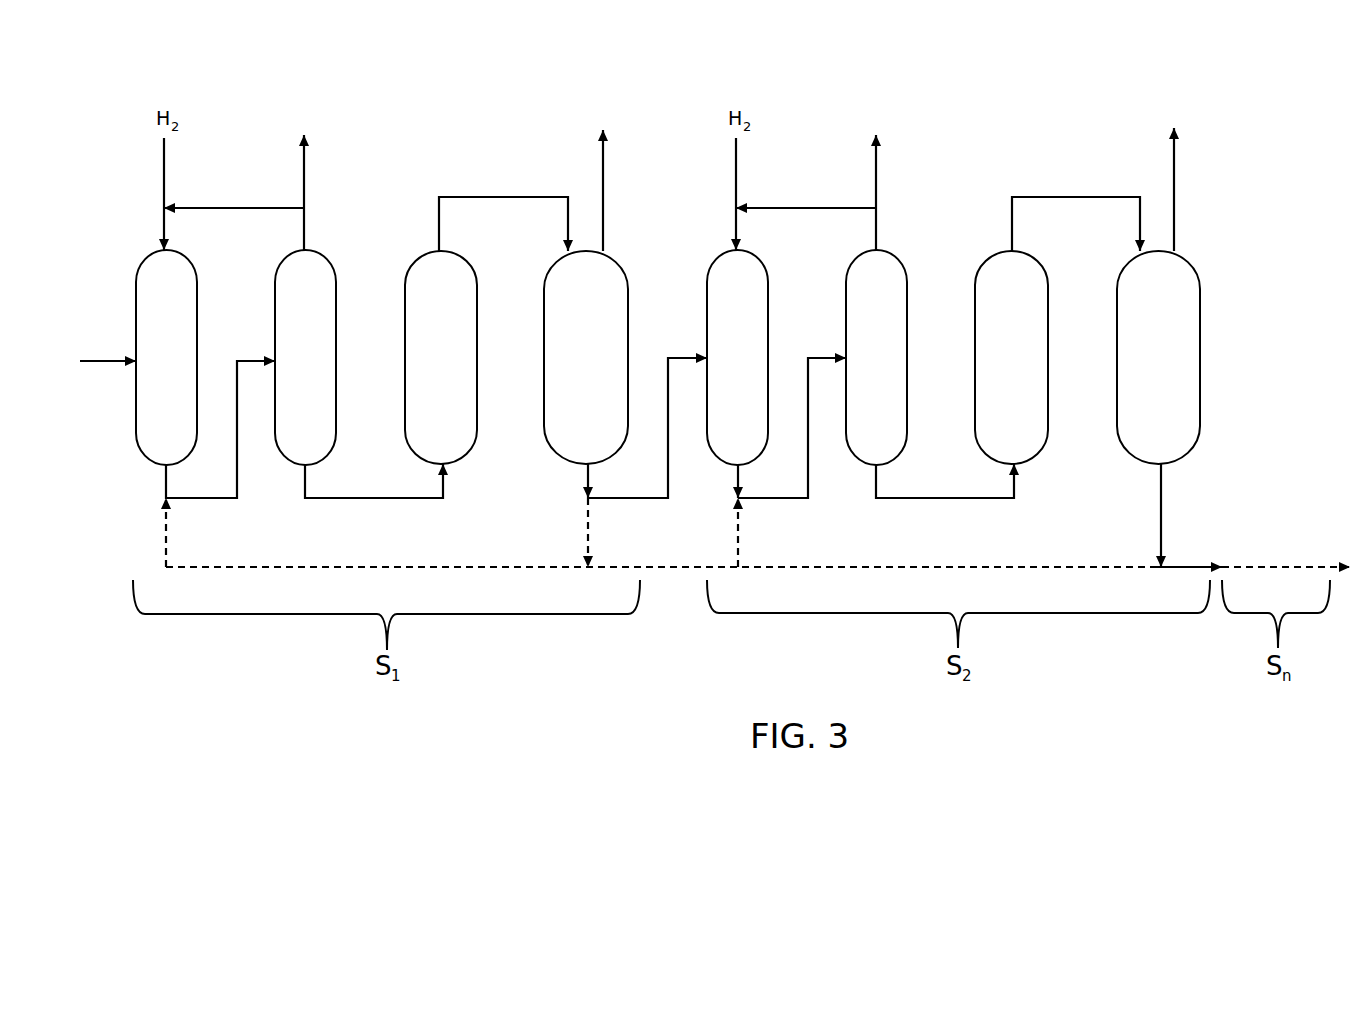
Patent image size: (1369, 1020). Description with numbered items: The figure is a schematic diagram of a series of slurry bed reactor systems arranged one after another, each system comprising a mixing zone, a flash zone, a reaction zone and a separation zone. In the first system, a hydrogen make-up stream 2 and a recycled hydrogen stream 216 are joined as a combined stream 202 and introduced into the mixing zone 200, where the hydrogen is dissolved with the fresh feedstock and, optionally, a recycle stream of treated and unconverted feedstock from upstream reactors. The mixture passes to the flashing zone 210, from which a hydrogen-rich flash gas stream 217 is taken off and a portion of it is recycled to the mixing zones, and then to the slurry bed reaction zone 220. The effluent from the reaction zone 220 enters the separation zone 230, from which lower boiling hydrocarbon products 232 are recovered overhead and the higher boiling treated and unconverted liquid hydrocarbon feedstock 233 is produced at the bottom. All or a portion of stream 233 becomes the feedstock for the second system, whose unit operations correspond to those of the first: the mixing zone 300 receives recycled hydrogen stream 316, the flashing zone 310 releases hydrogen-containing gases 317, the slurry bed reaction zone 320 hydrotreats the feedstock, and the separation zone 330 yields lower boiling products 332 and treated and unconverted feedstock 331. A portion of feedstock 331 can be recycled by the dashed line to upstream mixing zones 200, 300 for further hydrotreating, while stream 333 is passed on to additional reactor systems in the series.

The hydrogen make-up stream 2 is at (163, 173).
The combined stream 202 is at (163, 233).
The recycled hydrogen stream 216 is at (207, 207).
The flash gas stream 217 is at (307, 173).
The lower boiling hydrocarbon products 232 is at (602, 185).
The higher boiling treated and unconverted liquid hydrocarbon feedstock 233 is at (627, 498).
The recycled hydrogen stream 316 is at (777, 207).
The flash gas stream 317 is at (878, 174).
The treated and unconverted feedstock 331 is at (1163, 497).
The lower boiling hydrocarbon products 332 is at (1177, 208).
The treated and unconverted feedstock stream 333 is at (1189, 565).
The mixing zone 200 is at (149, 357).
The flashing zone 210 is at (288, 357).
The slurry bed reaction zone 220 is at (424, 357).
The separation zone 230 is at (569, 357).
The mixing zone 300 is at (720, 357).
The flashing zone 310 is at (859, 357).
The slurry bed reaction zone 320 is at (994, 357).
The separation zone 330 is at (1141, 357).